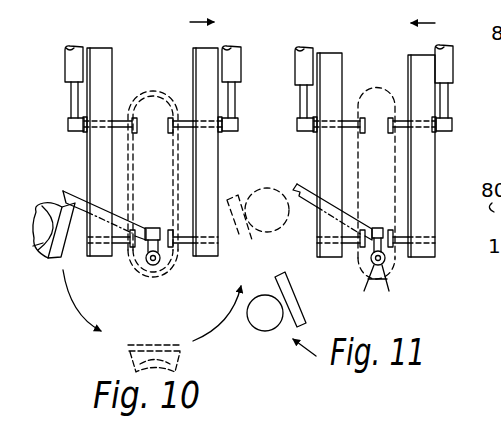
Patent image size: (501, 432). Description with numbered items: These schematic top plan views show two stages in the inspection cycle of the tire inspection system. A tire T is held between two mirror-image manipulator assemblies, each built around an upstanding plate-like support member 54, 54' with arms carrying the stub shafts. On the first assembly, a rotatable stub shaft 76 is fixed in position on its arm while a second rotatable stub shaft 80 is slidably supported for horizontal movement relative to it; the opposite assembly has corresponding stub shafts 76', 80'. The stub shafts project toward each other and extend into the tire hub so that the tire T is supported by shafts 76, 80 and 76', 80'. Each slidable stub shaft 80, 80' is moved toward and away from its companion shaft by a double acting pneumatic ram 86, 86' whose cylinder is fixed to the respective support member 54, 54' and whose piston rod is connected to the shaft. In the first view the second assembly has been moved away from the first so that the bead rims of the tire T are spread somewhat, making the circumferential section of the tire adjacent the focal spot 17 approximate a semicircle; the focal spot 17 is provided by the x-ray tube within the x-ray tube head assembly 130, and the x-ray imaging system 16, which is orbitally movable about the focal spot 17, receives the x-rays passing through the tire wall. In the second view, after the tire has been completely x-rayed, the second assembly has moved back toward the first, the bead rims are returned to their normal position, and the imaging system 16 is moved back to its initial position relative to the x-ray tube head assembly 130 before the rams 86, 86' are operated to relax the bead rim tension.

In FIG. 10, the support member 54 is at (99, 128).
In FIG. 11, the support member 54 is at (330, 132).
In FIG. 10, the support member 54' is at (226, 128).
In FIG. 11, the support member 54' is at (405, 144).
In FIG. 10, the ram 86 is at (63, 73).
In FIG. 11, the ram 86 is at (285, 89).
In FIG. 10, the ram 86' is at (249, 78).
In FIG. 11, the ram 86' is at (463, 88).
In FIG. 10, the stub shaft 80 is at (115, 95).
In FIG. 11, the stub shaft 80 is at (346, 96).
In FIG. 10, the stub shaft 80' is at (192, 95).
In FIG. 11, the stub shaft 80' is at (411, 96).
In FIG. 10, the tire T is at (134, 175).
In FIG. 11, the tire T is at (396, 183).
In FIG. 10, the stub shaft 76 is at (111, 263).
In FIG. 11, the stub shaft 76 is at (341, 261).
In FIG. 10, the stub shaft 76' is at (201, 261).
In FIG. 11, the stub shaft 76' is at (420, 261).
In FIG. 10, the focal spot 17 is at (155, 266).
In FIG. 11, the focal spot 17 is at (383, 266).
In FIG. 10, the x-ray imaging system 16 is at (39, 247).
In FIG. 11, the x-ray imaging system 16 is at (247, 189).
In FIG. 11, the x-ray tube head assembly 130 is at (371, 268).